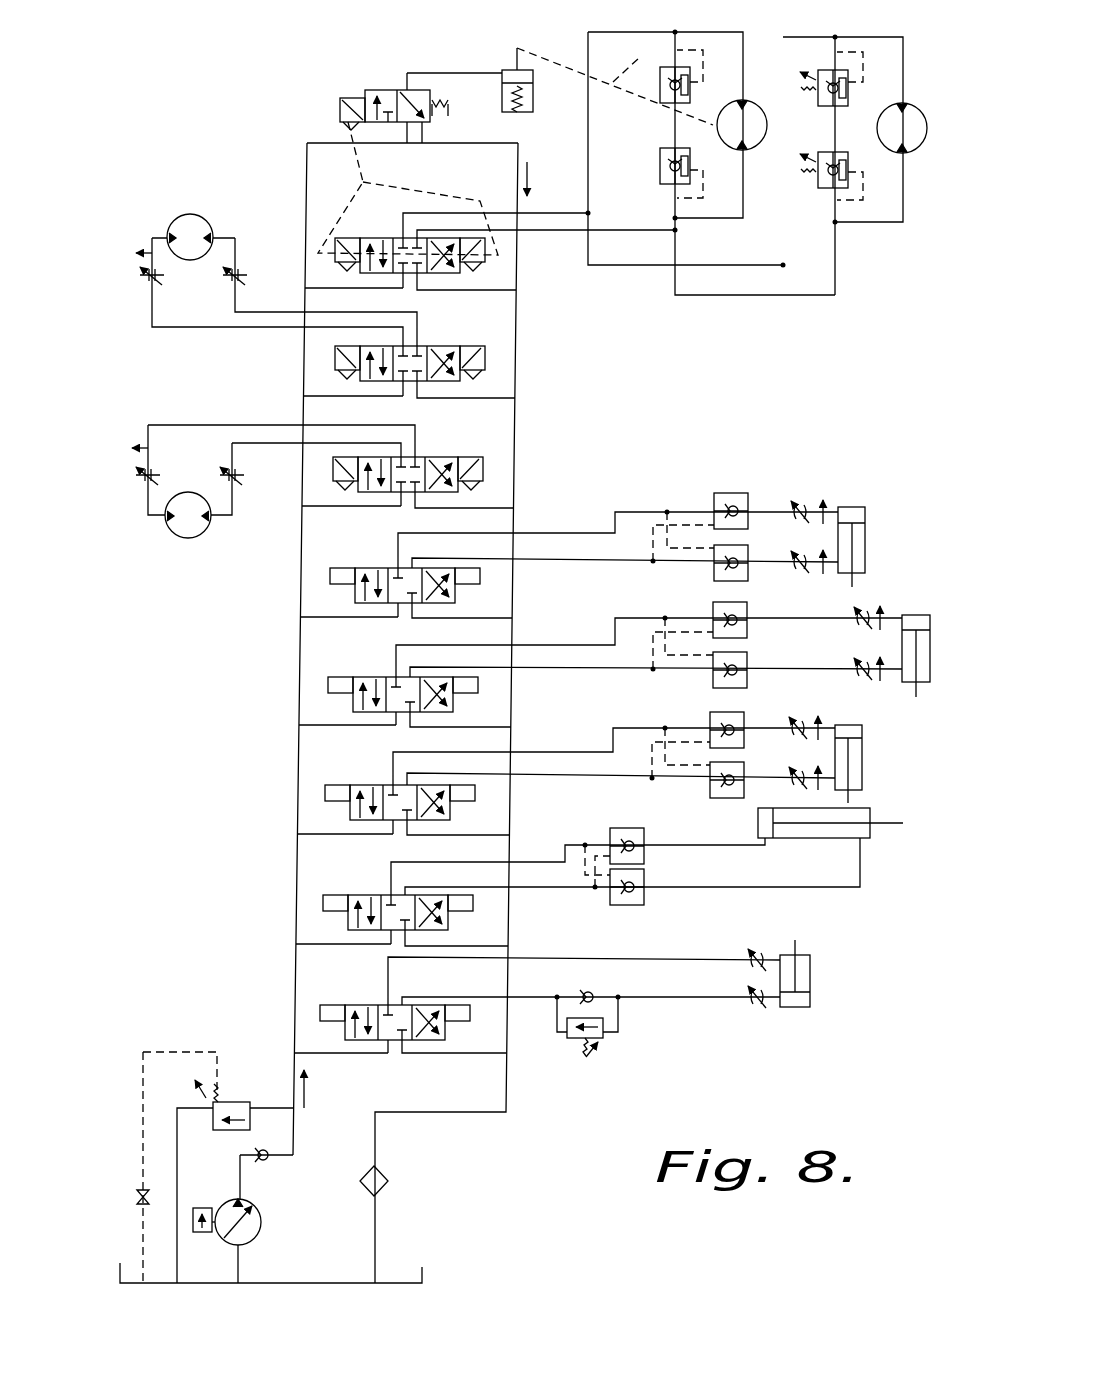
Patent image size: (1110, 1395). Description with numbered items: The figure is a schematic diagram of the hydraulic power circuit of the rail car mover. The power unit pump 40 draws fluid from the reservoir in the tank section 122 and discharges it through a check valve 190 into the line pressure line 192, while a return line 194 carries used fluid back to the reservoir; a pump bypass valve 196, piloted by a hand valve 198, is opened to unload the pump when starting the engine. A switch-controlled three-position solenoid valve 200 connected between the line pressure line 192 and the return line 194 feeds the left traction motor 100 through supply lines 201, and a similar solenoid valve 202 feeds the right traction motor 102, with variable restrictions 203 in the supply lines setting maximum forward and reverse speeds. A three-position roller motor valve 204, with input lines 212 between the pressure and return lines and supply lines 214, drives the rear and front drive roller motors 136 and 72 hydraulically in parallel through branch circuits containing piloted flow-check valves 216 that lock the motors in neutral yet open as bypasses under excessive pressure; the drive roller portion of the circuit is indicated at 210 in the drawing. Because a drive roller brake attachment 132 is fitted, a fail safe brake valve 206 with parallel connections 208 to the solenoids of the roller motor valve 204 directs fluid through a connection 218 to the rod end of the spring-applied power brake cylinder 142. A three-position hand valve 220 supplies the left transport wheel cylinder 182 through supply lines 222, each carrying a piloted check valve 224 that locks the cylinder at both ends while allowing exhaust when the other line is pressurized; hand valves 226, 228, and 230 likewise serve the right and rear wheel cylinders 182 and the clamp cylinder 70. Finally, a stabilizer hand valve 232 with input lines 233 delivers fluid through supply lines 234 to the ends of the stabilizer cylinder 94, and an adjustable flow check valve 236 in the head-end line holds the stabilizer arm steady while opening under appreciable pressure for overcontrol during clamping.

The power unit pump 40 is at (255, 1205).
The clamp cylinder 70 is at (758, 815).
The front drive roller motor 72 is at (924, 138).
The stabilizer cylinder 94 is at (810, 962).
The left traction motor 100 is at (207, 216).
The right traction motor 102 is at (190, 538).
The tank section 122 is at (424, 1270).
The drive roller brake attachment 132 is at (516, 52).
The rear drive roller motor 136 is at (752, 147).
The power brake cylinder 142 is at (533, 95).
The transport wheel cylinder 182 is at (865, 512).
The check valve 190 is at (268, 1160).
The line pressure line 192 is at (306, 165).
The return line 194 is at (552, 470).
The pump bypass valve 196 is at (245, 1101).
The hand valve 198 is at (150, 1197).
The three-position solenoid valve 200 is at (420, 345).
The supply lines 201 is at (235, 294).
The solenoid valve 202 is at (420, 456).
The variable restrictions 203 is at (228, 468).
The roller motor valve 204 is at (408, 188).
The fail safe brake valve 206 is at (386, 88).
The parallel connections 208 is at (390, 212).
The drive roller circuit 210 is at (615, 81).
The input lines 212 is at (405, 290).
The supply lines 214 is at (574, 216).
The piloted flow-check valves 216 is at (660, 172).
The connection 218 is at (485, 76).
The three-position hand valve 220 is at (376, 567).
The supply lines 222 is at (636, 530).
The piloted check valves 224 is at (748, 528).
The hand valve 226 is at (375, 676).
The hand valve 228 is at (360, 758).
The hand valve 230 is at (370, 894).
The stabilizer hand valve 232 is at (370, 1004).
The input lines 233 is at (380, 1058).
The supply lines 234 is at (665, 962).
The adjustable flow check valve 236 is at (618, 1046).